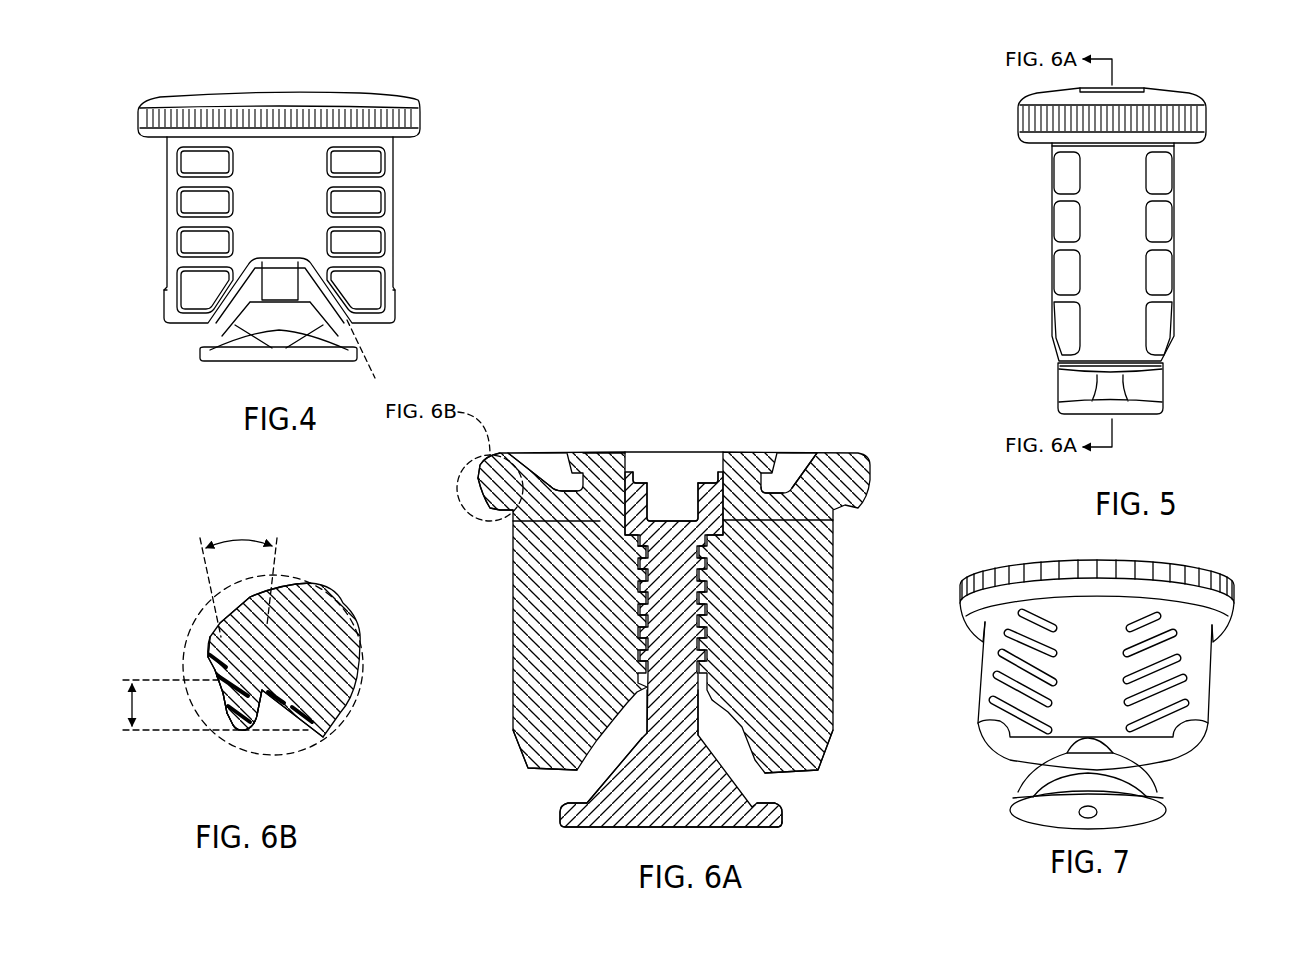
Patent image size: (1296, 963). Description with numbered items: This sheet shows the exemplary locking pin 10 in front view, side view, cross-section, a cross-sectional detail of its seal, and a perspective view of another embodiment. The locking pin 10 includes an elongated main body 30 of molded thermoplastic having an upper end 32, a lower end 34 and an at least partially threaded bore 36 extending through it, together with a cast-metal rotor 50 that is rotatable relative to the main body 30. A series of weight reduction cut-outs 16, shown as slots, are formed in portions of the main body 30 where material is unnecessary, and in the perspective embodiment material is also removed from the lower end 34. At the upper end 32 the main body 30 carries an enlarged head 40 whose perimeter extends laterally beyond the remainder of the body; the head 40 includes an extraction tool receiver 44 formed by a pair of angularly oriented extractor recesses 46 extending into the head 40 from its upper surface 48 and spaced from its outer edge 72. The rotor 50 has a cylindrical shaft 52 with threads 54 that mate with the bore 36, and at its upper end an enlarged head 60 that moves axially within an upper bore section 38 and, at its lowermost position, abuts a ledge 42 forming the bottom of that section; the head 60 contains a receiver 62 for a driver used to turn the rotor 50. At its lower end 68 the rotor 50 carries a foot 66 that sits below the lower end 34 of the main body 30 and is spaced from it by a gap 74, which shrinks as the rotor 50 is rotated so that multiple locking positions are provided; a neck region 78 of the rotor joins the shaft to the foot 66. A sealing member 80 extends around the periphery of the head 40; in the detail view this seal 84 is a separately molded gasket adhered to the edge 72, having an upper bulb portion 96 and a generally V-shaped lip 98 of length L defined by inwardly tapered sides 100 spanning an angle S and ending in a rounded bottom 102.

In FIG. 4, the locking pin 10 is at (363, 71).
In FIG. 5, the locking pin 10 is at (1203, 246).
In FIG. 6A, the locking pin 10 is at (810, 367).
In FIG. 7, the locking pin 10 is at (966, 573).
In FIG. 4, the weight reduction cut-outs 16 is at (193, 242).
In FIG. 5, the weight reduction cut-outs 16 is at (1163, 220).
In FIG. 7, the weight reduction cut-outs 16 is at (1000, 675).
In FIG. 4, the main body 30 is at (396, 214).
In FIG. 5, the main body 30 is at (1048, 245).
In FIG. 6A, the main body 30 is at (856, 632).
In FIG. 7, the main body 30 is at (964, 710).
In FIG. 4, the upper end 32 is at (110, 117).
In FIG. 6A, the upper end 32 is at (888, 455).
In FIG. 4, the lower end 34 is at (155, 321).
In FIG. 6A, the lower end 34 is at (501, 762).
In FIG. 7, the lower end 34 is at (1226, 727).
In FIG. 6A, the bore 36 is at (703, 630).
In FIG. 6A, the upper bore section 38 is at (628, 470).
In FIG. 4, the head 40 is at (162, 92).
In FIG. 5, the head 40 is at (1009, 127).
In FIG. 6A, the head 40 is at (851, 460).
In FIG. 6B, the head 40 is at (288, 587).
In FIG. 6A, the ledge 42 is at (622, 523).
In FIG. 6A, the extraction tool receiver 44 is at (527, 468).
In FIG. 6A, the extractor recesses 46 is at (567, 473).
In FIG. 6A, the upper surface 48 is at (597, 447).
In FIG. 4, the rotor 50 is at (183, 360).
In FIG. 5, the rotor 50 is at (1166, 380).
In FIG. 6A, the rotor 50 is at (587, 843).
In FIG. 7, the rotor 50 is at (1173, 826).
In FIG. 6A, the cylindrical shaft 52 is at (641, 713).
In FIG. 6A, the threads 54 is at (645, 660).
In FIG. 6A, the head 60 is at (793, 527).
In FIG. 6A, the receiver 62 is at (694, 500).
In FIG. 4, the foot 66 is at (212, 365).
In FIG. 6A, the foot 66 is at (770, 797).
In FIG. 7, the foot 66 is at (1167, 798).
In FIG. 6A, the lower end 68 is at (811, 820).
In FIG. 6A, the outer edge 72 is at (479, 465).
In FIG. 6B, the outer edge 72 is at (219, 621).
In FIG. 4, the gap 74 is at (366, 379).
In FIG. 6A, the post neck 78 is at (702, 713).
In FIG. 4, the sealing member 80 is at (418, 118).
In FIG. 5, the sealing member 80 is at (1207, 116).
In FIG. 6A, the sealing member 80 is at (485, 493).
In FIG. 6B, the sealing member 80 is at (206, 637).
In FIG. 7, the sealing member 80 is at (1217, 578).
In FIG. 6B, the seal 84 is at (217, 676).
In FIG. 6B, the upper bulb portion 96 is at (209, 650).
In FIG. 6B, the lip 98 is at (224, 710).
In FIG. 6B, the tapered sides 100 is at (227, 732).
In FIG. 6B, the rounded bottom 102 is at (242, 732).
In FIG. 6B, the span S is at (243, 540).
In FIG. 6B, the length L is at (132, 705).